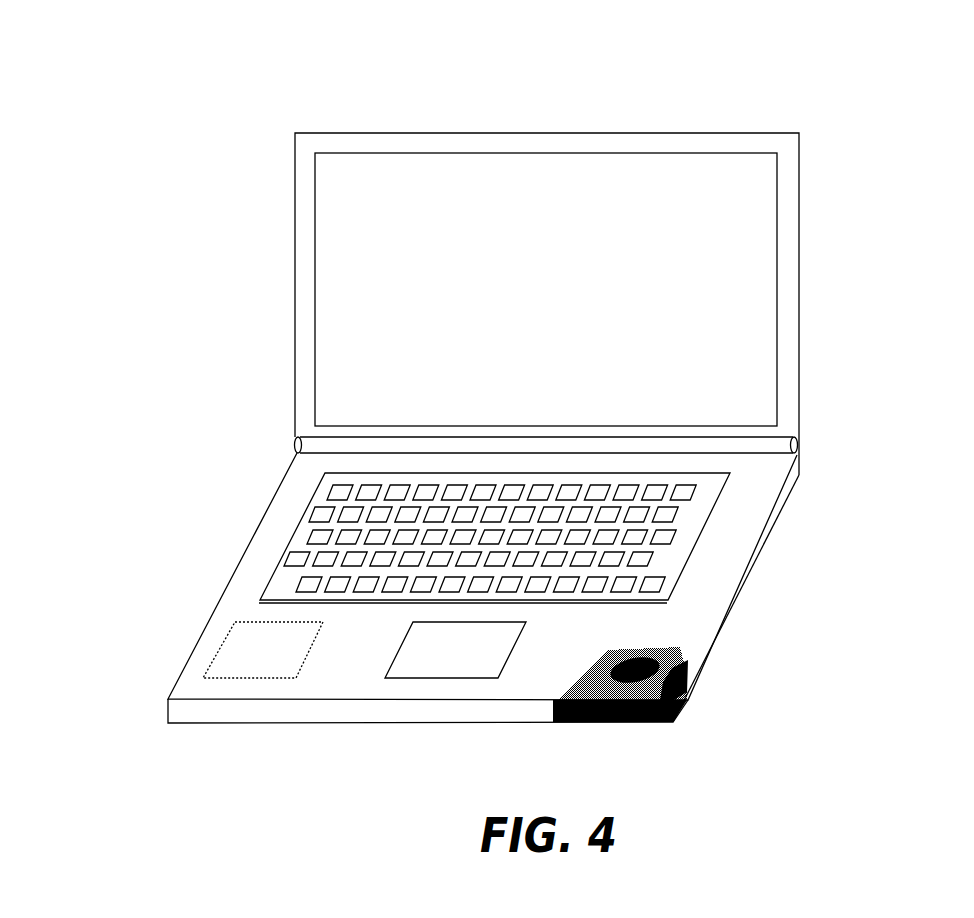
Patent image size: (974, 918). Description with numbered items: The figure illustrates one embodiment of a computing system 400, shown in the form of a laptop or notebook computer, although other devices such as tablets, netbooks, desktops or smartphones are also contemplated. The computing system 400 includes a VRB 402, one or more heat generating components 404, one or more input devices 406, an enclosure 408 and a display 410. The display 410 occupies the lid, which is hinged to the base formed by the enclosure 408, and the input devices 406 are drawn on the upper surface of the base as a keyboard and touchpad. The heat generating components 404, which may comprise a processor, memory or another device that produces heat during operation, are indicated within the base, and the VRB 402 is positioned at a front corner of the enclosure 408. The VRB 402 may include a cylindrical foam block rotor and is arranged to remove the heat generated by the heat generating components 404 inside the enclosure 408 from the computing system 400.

The computing system 400 is at (527, 41).
The VRB 402 is at (683, 646).
The heat generating components 404 is at (240, 643).
The input devices 406 is at (453, 648).
The enclosure 408 is at (733, 527).
The display 410 is at (695, 293).